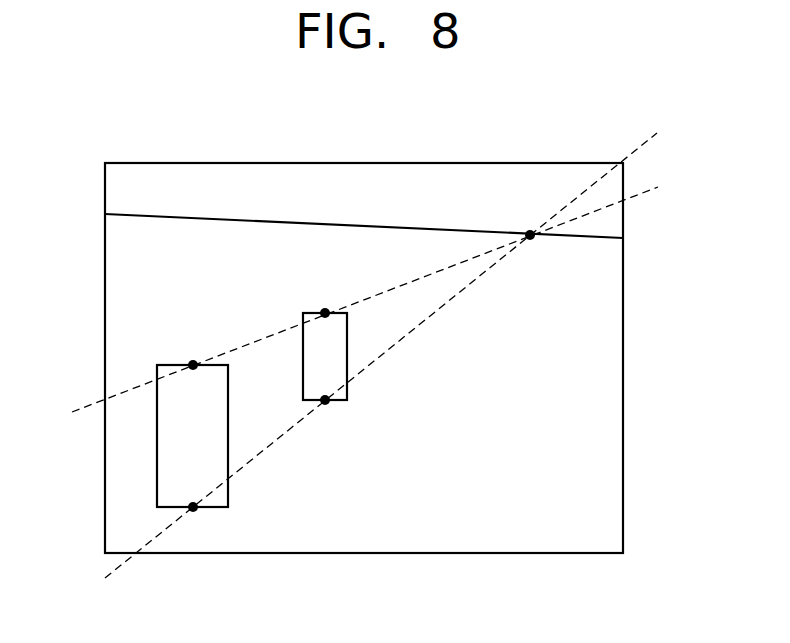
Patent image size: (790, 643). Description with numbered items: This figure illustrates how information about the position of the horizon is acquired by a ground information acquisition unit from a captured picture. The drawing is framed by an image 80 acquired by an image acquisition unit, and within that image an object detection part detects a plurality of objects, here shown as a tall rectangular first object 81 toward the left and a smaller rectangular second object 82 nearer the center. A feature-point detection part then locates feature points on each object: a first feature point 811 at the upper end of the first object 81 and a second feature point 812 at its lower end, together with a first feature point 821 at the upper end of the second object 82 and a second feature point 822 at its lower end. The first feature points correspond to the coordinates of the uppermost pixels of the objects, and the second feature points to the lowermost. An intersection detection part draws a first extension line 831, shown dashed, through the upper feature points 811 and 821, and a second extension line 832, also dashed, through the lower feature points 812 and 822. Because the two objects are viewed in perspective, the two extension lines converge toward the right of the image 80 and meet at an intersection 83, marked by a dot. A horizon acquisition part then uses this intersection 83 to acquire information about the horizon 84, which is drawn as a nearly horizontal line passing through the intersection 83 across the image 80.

The image 80 is at (623, 359).
The first object 81 is at (157, 436).
The second object 82 is at (347, 358).
The intersection 83 is at (530, 235).
The horizon 84 is at (259, 220).
The first feature point of the first object 811 is at (193, 365).
The second feature point of the first object 812 is at (193, 507).
The first feature point of the second object 821 is at (325, 313).
The second feature point of the second object 822 is at (325, 400).
The first extension line 831 is at (645, 192).
The second extension line 832 is at (640, 143).